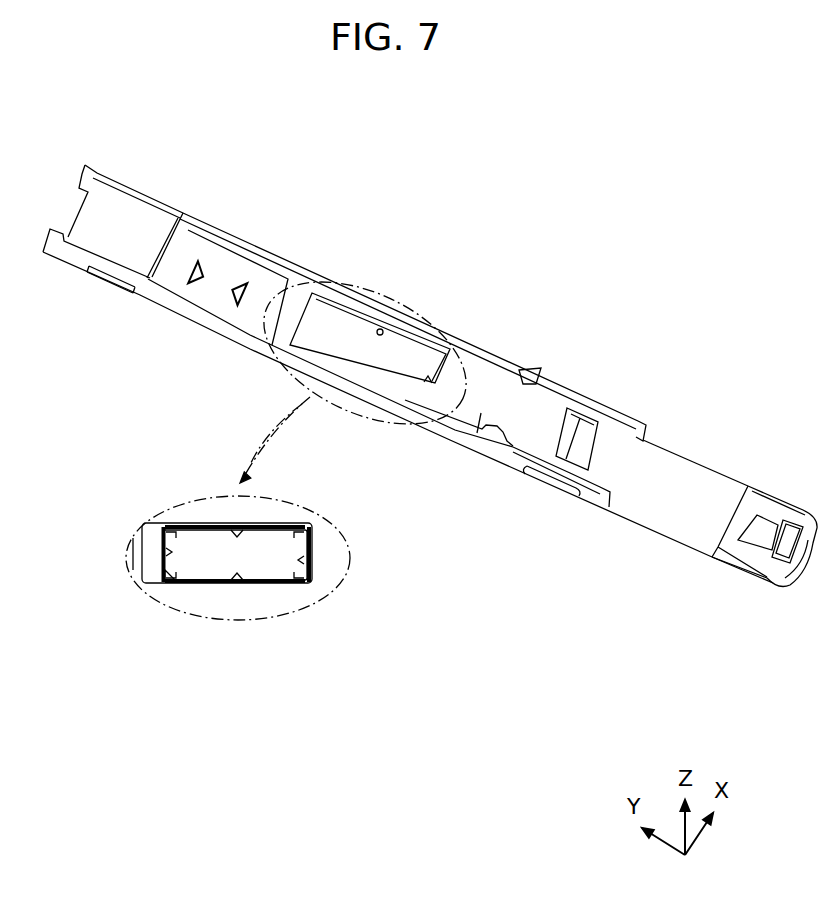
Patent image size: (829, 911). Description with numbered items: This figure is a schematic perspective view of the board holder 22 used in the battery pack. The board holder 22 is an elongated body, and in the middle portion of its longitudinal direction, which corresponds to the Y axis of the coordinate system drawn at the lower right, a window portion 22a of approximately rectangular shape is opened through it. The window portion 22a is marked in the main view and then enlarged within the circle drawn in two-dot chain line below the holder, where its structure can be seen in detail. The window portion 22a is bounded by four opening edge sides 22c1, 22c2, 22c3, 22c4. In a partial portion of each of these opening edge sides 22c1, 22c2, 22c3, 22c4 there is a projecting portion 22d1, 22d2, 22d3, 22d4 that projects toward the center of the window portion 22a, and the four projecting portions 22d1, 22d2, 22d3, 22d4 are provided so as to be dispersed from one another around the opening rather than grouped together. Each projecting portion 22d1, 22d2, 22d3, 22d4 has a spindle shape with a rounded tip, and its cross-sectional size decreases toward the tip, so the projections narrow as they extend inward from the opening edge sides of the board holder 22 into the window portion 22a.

The board holder 22 is at (488, 370).
The window portion 22a is at (343, 335).
The opening edge side 22c1 is at (194, 530).
The opening edge side 22c2 is at (164, 575).
The opening edge side 22c3 is at (275, 576).
The opening edge side 22c4 is at (302, 528).
The projecting portion 22d1 is at (238, 544).
The projecting portion 22d2 is at (172, 552).
The projecting portion 22d3 is at (237, 572).
The projecting portion 22d4 is at (303, 560).